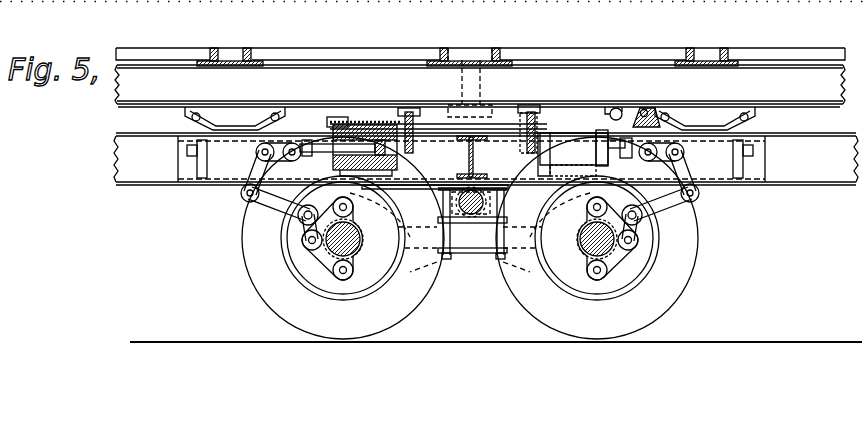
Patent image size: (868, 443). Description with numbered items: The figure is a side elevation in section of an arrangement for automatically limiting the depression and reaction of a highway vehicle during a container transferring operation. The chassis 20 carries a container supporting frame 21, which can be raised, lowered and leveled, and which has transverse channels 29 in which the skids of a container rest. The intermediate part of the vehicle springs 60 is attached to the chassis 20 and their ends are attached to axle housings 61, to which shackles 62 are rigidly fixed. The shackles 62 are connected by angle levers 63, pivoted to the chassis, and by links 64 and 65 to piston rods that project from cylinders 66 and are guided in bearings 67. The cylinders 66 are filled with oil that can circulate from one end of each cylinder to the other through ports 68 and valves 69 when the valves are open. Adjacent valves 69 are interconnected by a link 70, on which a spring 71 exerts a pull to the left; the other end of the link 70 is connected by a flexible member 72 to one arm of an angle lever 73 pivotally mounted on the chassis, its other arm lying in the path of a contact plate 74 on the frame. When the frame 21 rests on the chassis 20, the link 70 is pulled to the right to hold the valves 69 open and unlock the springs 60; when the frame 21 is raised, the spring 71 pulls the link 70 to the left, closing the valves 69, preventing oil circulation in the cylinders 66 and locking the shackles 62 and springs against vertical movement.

The chassis 20 is at (143, 184).
The container supporting frame 21 is at (118, 107).
The transverse channels 29 is at (218, 60).
The springs 60 is at (393, 187).
The axle housings 61 is at (352, 233).
The shackles 62 is at (328, 257).
The angle levers 63 is at (272, 203).
The links 64 is at (300, 228).
The links 65 is at (277, 144).
The cylinders 66 is at (336, 165).
The bearings 67 is at (197, 157).
The ports 68 is at (375, 133).
The valves 69 is at (407, 123).
The link 70 is at (508, 127).
The spring 71 is at (368, 128).
The flexible member 72 is at (610, 133).
The angle lever 73 is at (633, 110).
The contact plate 74 is at (616, 107).